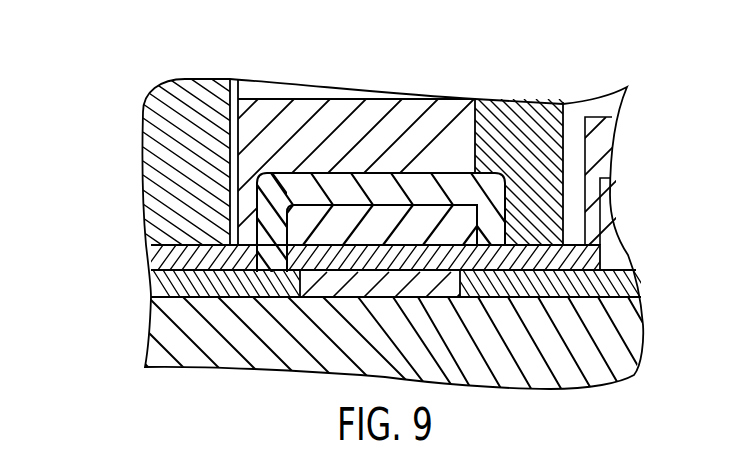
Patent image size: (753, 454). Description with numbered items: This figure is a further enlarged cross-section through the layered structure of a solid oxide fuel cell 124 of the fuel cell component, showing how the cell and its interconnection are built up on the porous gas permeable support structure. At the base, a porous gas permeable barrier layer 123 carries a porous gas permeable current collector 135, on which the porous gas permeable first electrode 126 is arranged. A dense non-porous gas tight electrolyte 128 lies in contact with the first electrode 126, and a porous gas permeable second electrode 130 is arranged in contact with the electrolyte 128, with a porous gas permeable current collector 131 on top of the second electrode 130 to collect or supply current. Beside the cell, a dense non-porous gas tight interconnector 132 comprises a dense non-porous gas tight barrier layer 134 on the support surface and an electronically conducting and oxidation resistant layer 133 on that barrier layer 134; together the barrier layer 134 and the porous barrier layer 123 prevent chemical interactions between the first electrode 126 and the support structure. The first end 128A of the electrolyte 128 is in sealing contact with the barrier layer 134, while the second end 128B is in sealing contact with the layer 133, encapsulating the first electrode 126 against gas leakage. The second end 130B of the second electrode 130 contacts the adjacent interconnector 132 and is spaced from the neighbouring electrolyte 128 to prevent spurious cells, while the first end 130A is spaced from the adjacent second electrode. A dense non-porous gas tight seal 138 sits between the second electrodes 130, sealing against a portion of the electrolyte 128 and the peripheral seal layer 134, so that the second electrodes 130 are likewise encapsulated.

The solid oxide fuel cell 124 is at (66, 66).
The porous gas permeable current collector 131 is at (230, 142).
The porous gas permeable second electrode 130 is at (400, 127).
The first end of the porous gas permeable second electrode 130A is at (460, 127).
The second end of the porous gas permeable second electrode 130B is at (243, 170).
The dense non-porous gas tight electrolyte member 128 is at (303, 187).
The first end of the dense non-porous gas tight electrolyte 128A is at (535, 270).
The second end of the dense non-porous gas tight electrolyte 128B is at (272, 258).
The dense non-porous gas tight seal 138 is at (517, 127).
The electronically conducting and oxidation resistant layer 133 is at (162, 258).
The dense non-porous gas tight interconnector 132 is at (172, 283).
The dense non-porous gas tight barrier layer 134 is at (195, 283).
The porous gas permeable barrier layer 123 is at (337, 288).
The porous gas permeable first electrode 126 is at (427, 260).
The porous gas permeable current collector 135 is at (490, 237).